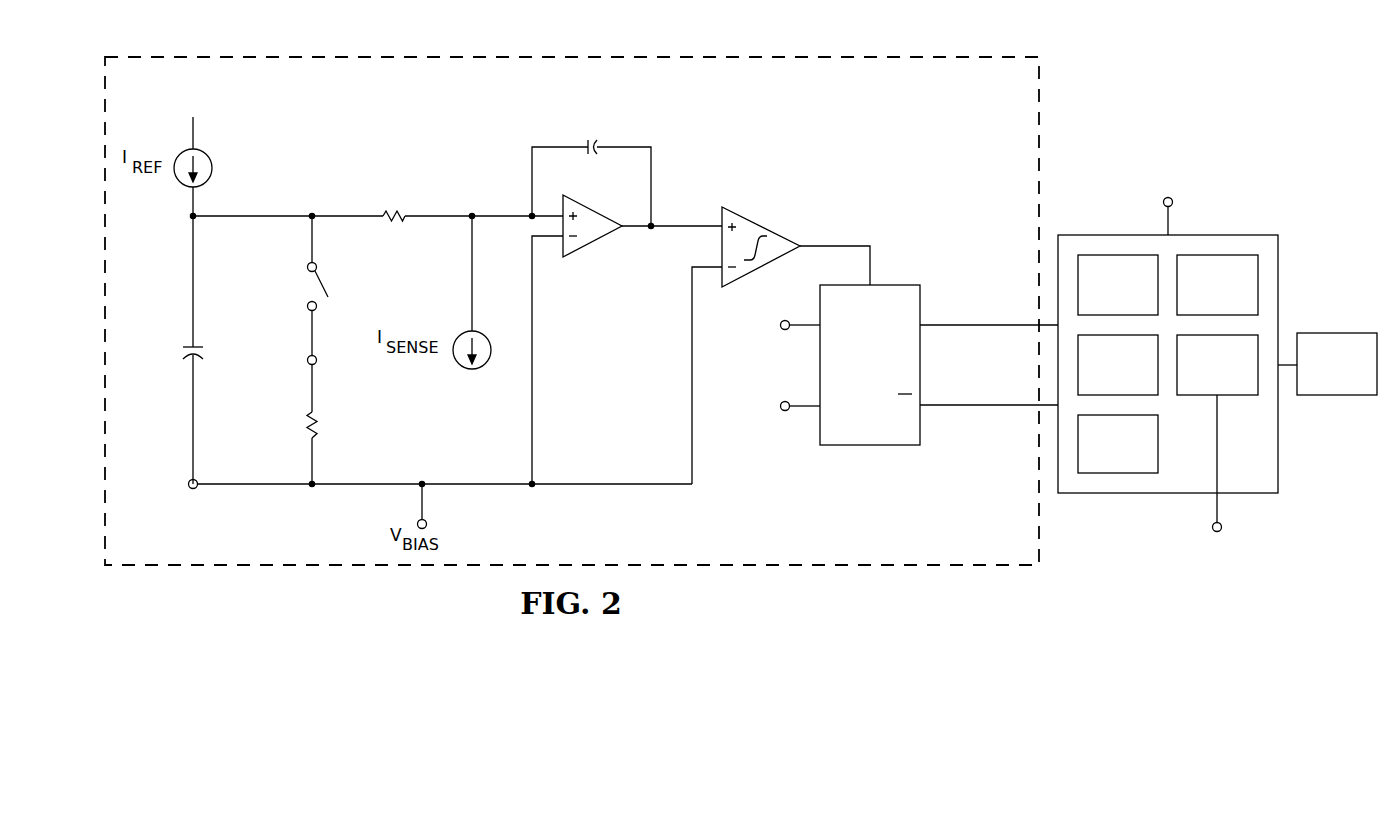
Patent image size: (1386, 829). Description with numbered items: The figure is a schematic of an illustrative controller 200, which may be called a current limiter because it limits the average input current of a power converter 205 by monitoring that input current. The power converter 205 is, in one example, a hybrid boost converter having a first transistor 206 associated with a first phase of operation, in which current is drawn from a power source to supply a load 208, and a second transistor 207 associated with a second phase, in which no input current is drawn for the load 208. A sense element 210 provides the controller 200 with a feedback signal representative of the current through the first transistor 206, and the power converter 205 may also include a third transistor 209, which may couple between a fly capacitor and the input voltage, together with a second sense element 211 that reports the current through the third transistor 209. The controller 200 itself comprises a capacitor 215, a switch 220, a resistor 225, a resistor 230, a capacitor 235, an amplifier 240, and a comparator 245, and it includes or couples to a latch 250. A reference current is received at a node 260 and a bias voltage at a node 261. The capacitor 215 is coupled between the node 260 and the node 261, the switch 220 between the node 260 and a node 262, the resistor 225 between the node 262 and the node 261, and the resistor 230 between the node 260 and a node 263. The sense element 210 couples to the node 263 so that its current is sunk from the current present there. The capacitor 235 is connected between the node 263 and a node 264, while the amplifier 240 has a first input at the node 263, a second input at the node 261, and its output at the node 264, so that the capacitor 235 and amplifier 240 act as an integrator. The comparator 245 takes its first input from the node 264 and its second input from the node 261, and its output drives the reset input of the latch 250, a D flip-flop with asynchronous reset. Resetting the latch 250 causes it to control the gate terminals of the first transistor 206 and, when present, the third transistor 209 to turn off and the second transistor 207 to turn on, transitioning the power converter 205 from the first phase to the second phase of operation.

The controller 200 is at (366, 57).
The power converter 205 is at (1222, 235).
The first transistor 206 is at (1101, 295).
The second transistor 207 is at (1101, 375).
The load 208 is at (1320, 375).
The third transistor 209 is at (1201, 295).
The sense element 210 is at (1201, 375).
The second sense element 211 is at (1101, 454).
The capacitor 215 is at (182, 349).
The switch 220 is at (326, 280).
The resistor 225 is at (308, 427).
The resistor 230 is at (386, 210).
The capacitor 235 is at (592, 139).
The amplifier 240 is at (590, 208).
The comparator 245 is at (762, 225).
The latch 250 is at (853, 376).
The node 260 is at (189, 221).
The node 261 is at (189, 489).
The node 262 is at (307, 362).
The node 263 is at (472, 212).
The node 264 is at (655, 222).